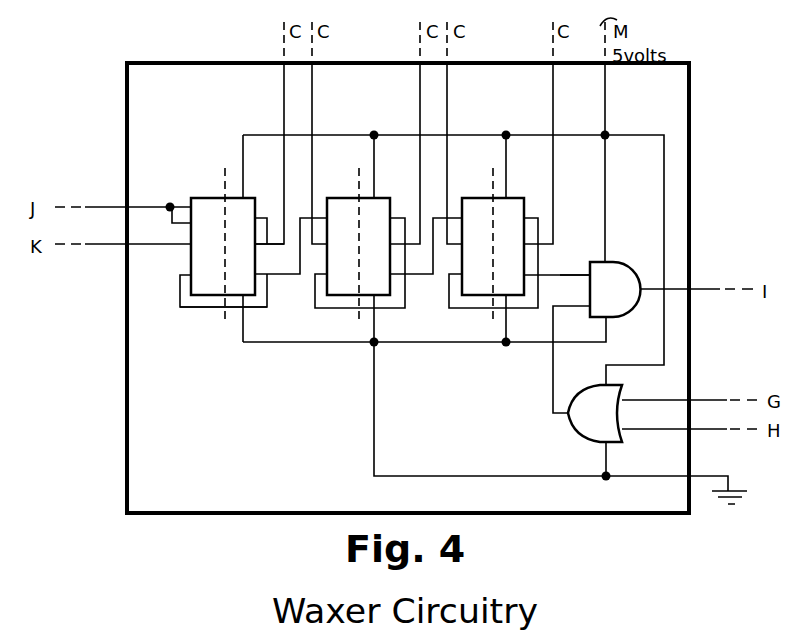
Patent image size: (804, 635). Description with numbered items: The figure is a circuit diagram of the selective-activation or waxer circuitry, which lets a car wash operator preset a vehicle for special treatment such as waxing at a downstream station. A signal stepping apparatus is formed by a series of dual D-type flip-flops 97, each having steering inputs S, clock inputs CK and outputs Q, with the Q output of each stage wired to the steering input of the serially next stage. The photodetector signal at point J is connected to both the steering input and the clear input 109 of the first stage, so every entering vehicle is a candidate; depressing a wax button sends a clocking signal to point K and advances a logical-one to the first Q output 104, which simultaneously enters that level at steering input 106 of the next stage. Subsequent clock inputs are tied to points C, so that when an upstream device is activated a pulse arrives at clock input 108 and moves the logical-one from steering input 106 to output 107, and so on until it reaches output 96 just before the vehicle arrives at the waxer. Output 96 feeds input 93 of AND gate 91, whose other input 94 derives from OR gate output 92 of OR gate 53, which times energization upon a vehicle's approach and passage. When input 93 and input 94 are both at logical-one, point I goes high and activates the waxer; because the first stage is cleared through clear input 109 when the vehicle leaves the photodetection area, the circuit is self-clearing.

The dual D-type flip-flops 97 is at (235, 197).
The clear input 109 is at (181, 191).
The steering input 106 is at (264, 216).
The Q output 104 is at (184, 276).
The clock input 108 is at (262, 250).
The output 107 is at (264, 278).
The output of the signal stepping apparatus 96 is at (535, 276).
The input to AND gate 93 is at (579, 274).
The AND gate 91 is at (641, 240).
The input to AND gate 94 is at (586, 306).
The OR gate output 92 is at (568, 417).
The OR gate 53 is at (612, 443).